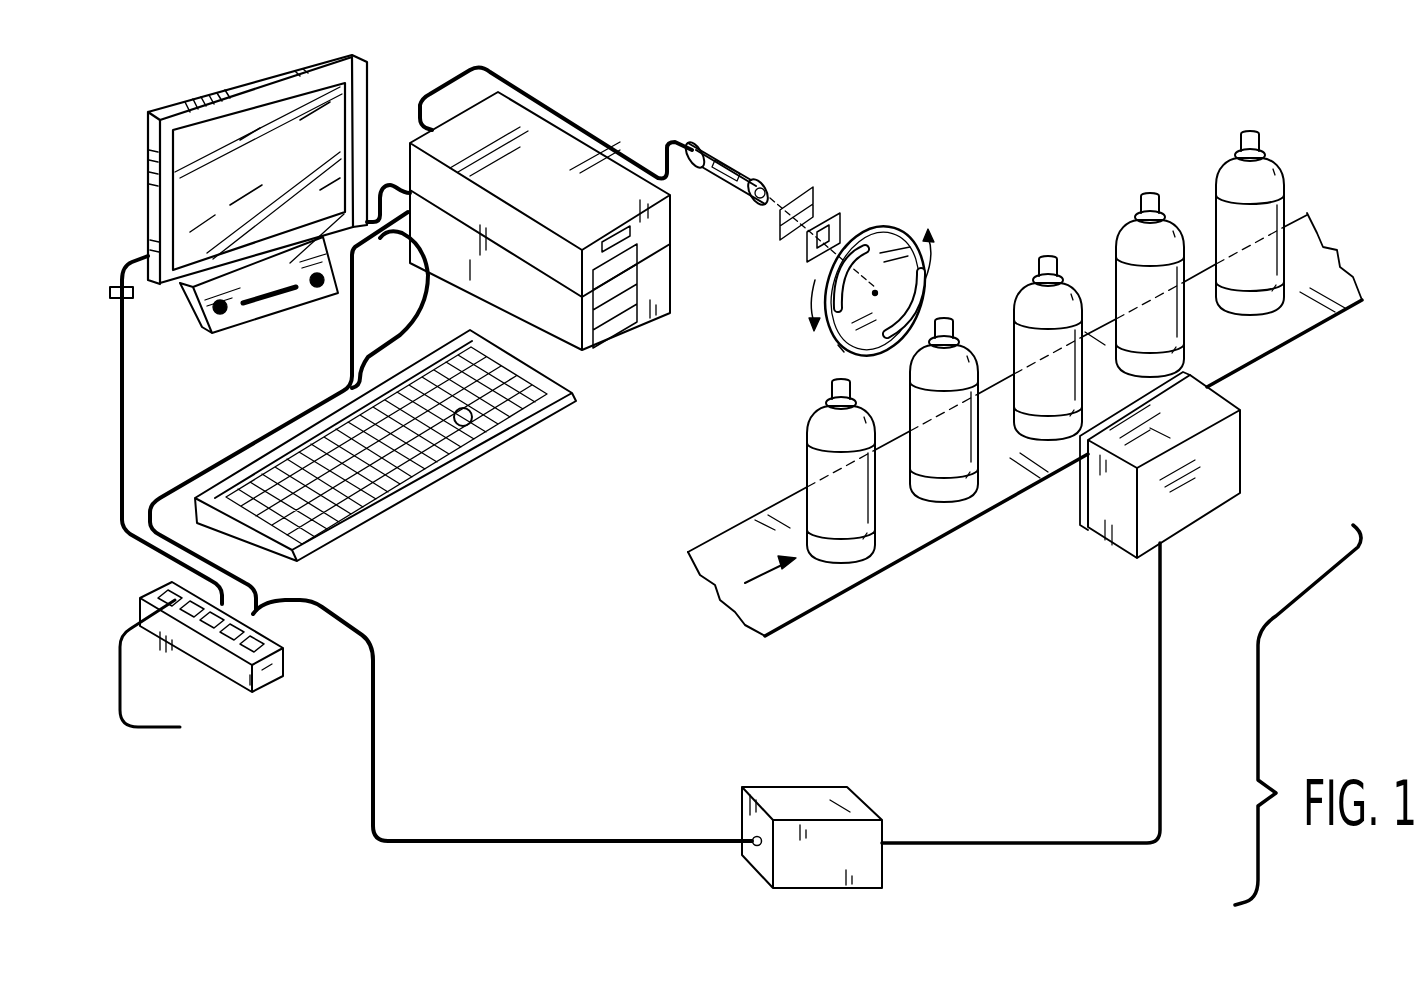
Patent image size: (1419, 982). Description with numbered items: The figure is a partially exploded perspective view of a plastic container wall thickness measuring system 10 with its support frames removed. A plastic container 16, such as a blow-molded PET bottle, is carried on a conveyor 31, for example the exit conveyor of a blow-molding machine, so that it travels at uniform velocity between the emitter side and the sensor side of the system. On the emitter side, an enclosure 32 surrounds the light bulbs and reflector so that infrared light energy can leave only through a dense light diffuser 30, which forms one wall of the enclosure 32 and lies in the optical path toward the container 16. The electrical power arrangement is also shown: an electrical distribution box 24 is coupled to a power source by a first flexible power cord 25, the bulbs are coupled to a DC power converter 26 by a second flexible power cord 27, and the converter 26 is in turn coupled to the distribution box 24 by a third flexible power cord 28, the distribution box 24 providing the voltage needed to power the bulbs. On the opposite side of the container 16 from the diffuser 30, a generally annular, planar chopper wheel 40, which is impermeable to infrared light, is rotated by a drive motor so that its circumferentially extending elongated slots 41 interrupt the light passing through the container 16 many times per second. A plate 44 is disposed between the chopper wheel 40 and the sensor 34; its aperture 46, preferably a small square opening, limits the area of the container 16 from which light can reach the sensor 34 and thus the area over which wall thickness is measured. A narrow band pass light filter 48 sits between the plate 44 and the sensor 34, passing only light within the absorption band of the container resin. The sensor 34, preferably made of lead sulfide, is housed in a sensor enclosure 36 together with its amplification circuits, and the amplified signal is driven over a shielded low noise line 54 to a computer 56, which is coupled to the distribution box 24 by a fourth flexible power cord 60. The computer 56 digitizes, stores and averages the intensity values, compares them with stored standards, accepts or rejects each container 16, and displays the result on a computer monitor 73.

The plastic container wall thickness measuring system 10 is at (1021, 88).
The plastic container 16 is at (1237, 145).
The electrical distribution box 24 is at (275, 678).
The first flexible power cord 25 is at (158, 730).
The DC power converter 26 is at (868, 857).
The second flexible power cord 27 is at (958, 842).
The third flexible power cord 28 is at (628, 838).
The dense light diffuser 30 is at (1083, 508).
The conveyor 31 is at (786, 638).
The enclosure 32 is at (1243, 427).
The sensor 34 is at (790, 185).
The sensor enclosure 36 is at (692, 140).
The chopper wheel 40 is at (842, 277).
The elongated slots 41 is at (838, 345).
The plate 44 is at (847, 243).
The aperture 46 is at (812, 285).
The narrow band pass light filter 48 is at (828, 215).
The shielded low noise line 54 is at (526, 96).
The computer 56 is at (478, 125).
The fourth flexible power cord 60 is at (280, 425).
The computer monitor 73 is at (245, 150).